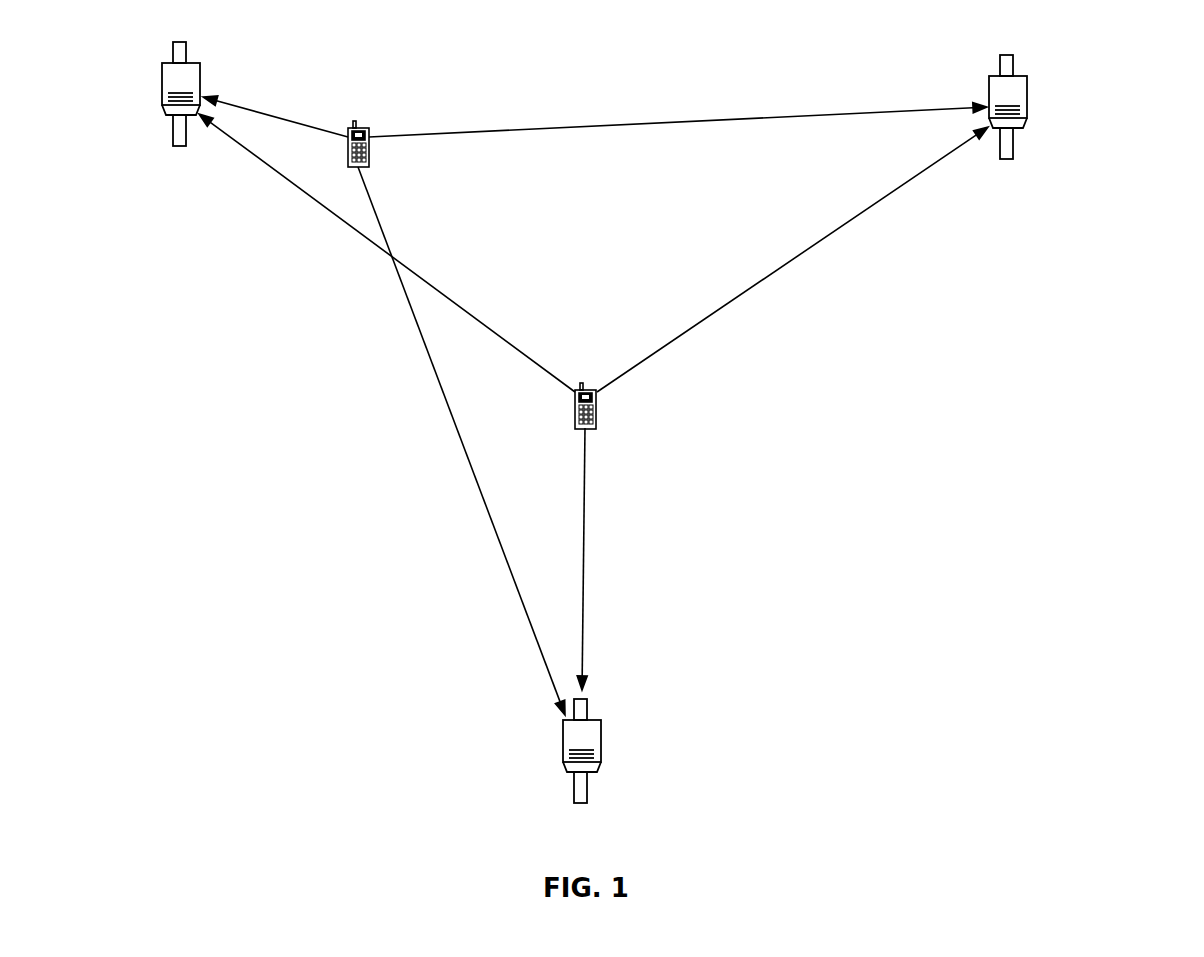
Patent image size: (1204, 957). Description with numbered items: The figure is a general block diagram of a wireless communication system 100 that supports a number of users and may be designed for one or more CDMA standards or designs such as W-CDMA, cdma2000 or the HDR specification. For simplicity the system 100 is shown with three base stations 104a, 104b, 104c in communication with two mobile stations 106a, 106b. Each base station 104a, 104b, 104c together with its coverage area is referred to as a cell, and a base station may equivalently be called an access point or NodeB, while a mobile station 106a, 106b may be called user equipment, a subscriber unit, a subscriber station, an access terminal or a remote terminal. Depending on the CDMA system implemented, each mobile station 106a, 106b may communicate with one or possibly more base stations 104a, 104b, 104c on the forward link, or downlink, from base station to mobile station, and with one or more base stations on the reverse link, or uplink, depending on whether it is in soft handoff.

The wireless communication system 100 is at (1155, 66).
The base station 104a is at (187, 63).
The base station 104b is at (1014, 76).
The base station 104c is at (588, 720).
The mobile station 106a is at (361, 128).
The mobile station 106b is at (580, 430).